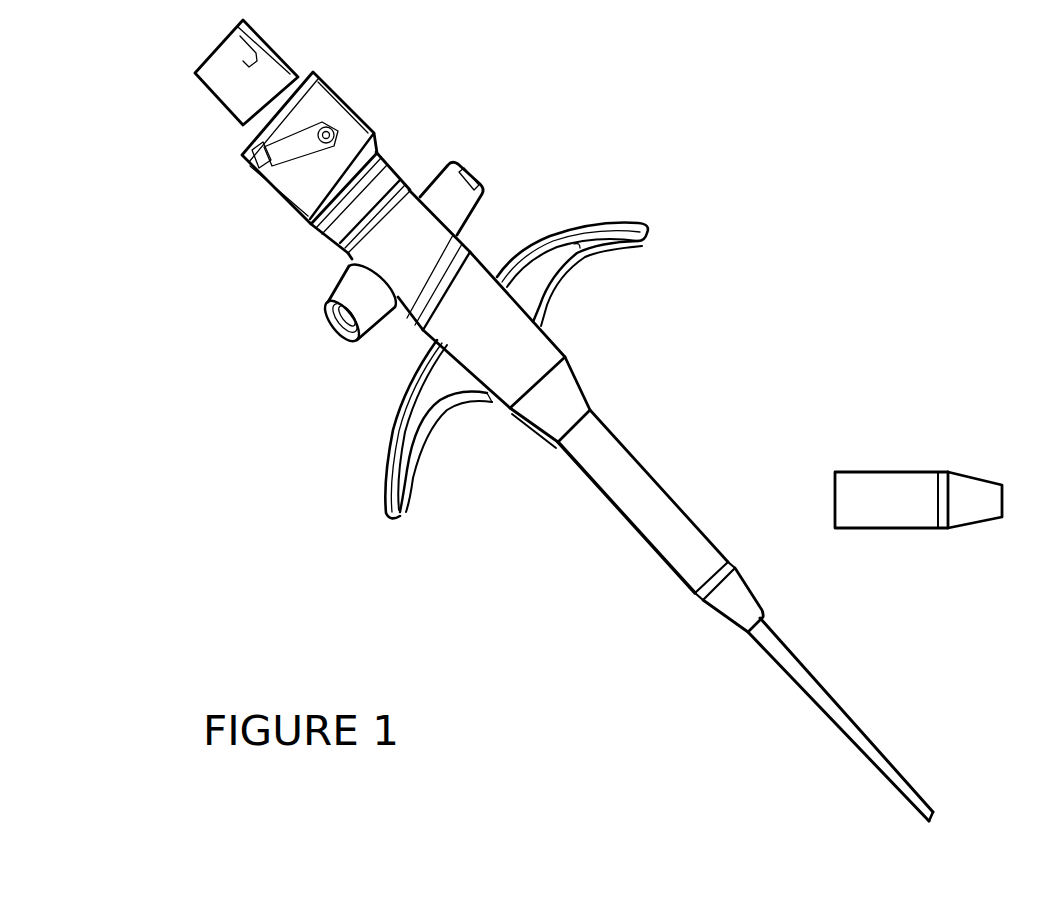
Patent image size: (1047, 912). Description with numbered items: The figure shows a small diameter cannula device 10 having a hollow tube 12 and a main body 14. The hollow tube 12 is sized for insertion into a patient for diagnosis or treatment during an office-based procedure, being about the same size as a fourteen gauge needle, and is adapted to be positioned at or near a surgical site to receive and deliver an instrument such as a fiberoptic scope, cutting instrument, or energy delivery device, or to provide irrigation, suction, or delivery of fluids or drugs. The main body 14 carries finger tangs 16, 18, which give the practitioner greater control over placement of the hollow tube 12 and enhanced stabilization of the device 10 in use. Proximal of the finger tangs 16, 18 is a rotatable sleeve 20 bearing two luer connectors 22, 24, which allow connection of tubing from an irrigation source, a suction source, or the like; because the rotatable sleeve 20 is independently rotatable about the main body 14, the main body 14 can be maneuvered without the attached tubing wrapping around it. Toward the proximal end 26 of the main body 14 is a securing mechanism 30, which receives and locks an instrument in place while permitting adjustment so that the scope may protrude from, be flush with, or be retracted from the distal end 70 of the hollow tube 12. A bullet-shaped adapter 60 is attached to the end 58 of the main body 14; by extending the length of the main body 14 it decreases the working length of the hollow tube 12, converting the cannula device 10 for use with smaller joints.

The cannula device 10 is at (898, 250).
The hollow tube 12 is at (857, 723).
The main body 14 is at (640, 460).
The finger tang 16 is at (647, 228).
The finger tang 18 is at (362, 503).
The rotatable sleeve 20 is at (334, 352).
The luer connector 22 is at (331, 316).
The luer connector 24 is at (477, 168).
The proximal end 26 is at (258, 193).
The securing mechanism 30 is at (212, 102).
The end of main body 58 is at (745, 635).
The adapter 60 is at (908, 455).
The distal end 70 is at (928, 820).